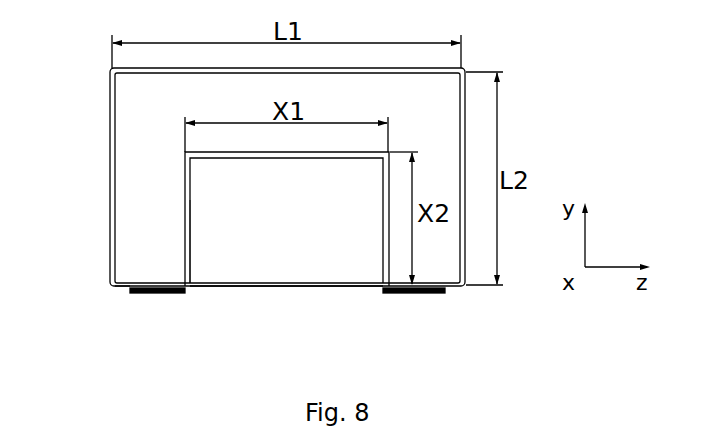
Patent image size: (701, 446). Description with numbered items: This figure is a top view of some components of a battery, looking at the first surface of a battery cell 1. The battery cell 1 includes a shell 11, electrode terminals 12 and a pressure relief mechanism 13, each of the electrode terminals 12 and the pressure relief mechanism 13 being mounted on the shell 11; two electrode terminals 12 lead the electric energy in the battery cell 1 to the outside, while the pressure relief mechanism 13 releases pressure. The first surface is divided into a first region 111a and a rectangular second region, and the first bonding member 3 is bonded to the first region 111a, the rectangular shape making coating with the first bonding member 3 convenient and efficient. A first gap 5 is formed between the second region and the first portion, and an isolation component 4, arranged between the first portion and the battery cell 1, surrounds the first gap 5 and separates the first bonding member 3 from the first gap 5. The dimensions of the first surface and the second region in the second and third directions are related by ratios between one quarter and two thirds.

The battery cell 1 is at (268, 335).
The first bonding member 3 is at (127, 117).
The isolation component 4 is at (184, 205).
The first gap 5 is at (343, 248).
The shell 11 is at (121, 290).
The electrode terminal 12 is at (180, 290).
The pressure relief mechanism 13 is at (273, 290).
The first region 111a is at (213, 259).